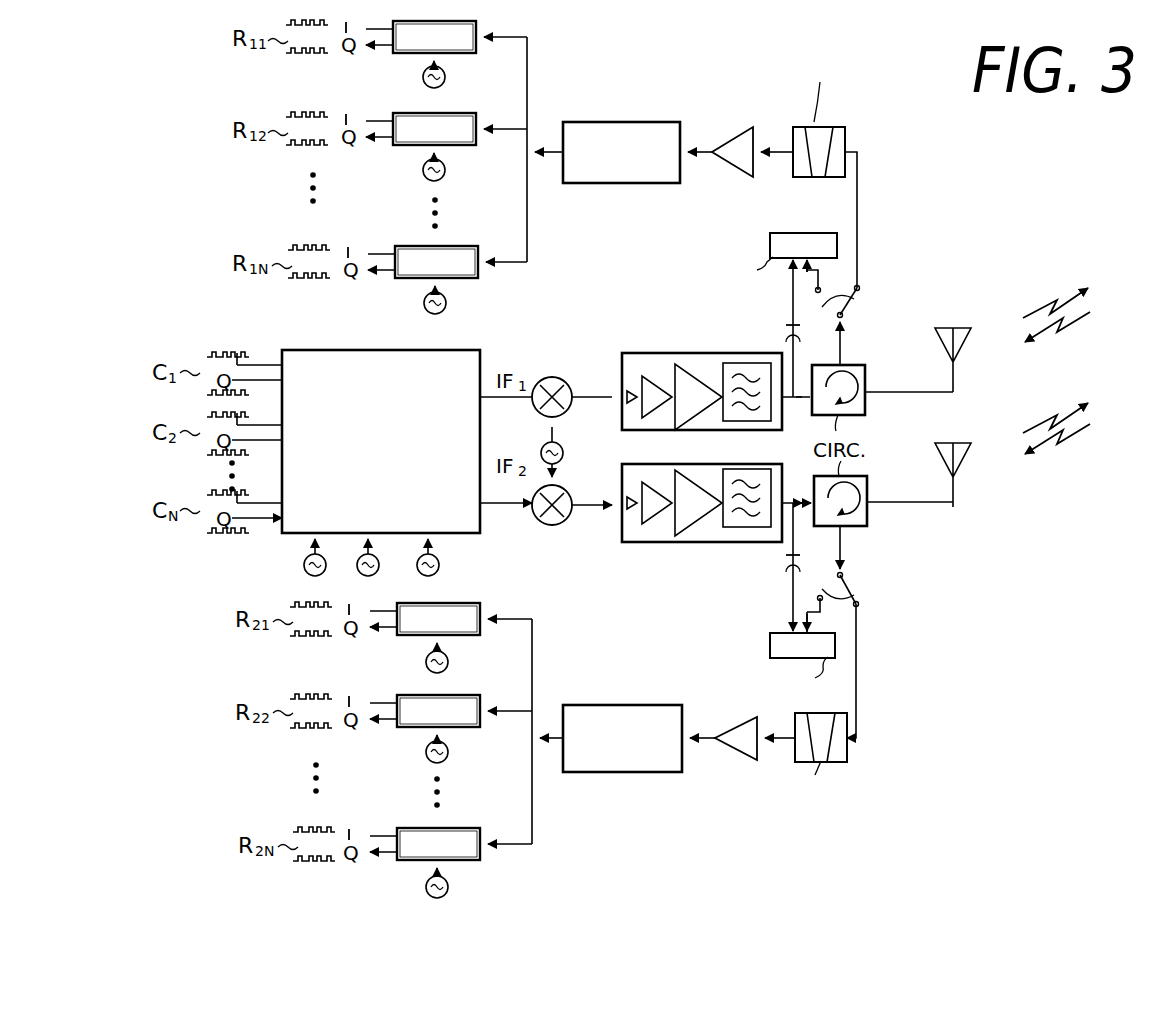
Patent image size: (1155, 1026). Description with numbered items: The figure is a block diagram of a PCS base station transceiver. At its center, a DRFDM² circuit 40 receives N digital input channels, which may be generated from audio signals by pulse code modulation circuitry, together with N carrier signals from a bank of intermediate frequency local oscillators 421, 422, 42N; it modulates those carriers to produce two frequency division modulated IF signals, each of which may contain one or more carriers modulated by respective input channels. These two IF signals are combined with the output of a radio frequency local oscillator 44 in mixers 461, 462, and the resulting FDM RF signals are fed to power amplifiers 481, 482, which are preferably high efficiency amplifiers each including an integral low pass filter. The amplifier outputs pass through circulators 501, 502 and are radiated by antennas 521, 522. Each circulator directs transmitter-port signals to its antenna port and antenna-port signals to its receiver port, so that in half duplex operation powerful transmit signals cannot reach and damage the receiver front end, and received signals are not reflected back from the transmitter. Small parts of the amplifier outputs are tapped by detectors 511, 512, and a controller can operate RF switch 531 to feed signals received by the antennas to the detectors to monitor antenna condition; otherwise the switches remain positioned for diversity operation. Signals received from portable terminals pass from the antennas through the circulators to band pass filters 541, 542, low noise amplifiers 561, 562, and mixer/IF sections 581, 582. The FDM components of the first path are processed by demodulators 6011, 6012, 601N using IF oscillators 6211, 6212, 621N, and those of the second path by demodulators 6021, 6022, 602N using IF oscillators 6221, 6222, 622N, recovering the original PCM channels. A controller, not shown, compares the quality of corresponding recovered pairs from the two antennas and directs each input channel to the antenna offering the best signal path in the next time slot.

The DRFDM² circuit 40 is at (381, 441).
The intermediate frequency local oscillator 421 is at (304, 565).
The intermediate frequency local oscillator 422 is at (375, 575).
The intermediate frequency local oscillator 42N is at (440, 567).
The radio frequency local oscillator 44 is at (563, 453).
The mixer 461 is at (558, 375).
The mixer 462 is at (552, 525).
The power amplifier 481 is at (678, 352).
The power amplifier 482 is at (678, 544).
The circulator 501 is at (852, 365).
The circulator 502 is at (866, 523).
The detector 511 is at (800, 233).
The detector 512 is at (768, 633).
The antenna 521 is at (953, 330).
The antenna 522 is at (958, 478).
The RF switch 531 is at (860, 286).
The band pass filter 541 is at (847, 128).
The band pass filter 542 is at (849, 760).
The low noise amplifier 561 is at (735, 165).
The low noise amplifier 562 is at (728, 717).
The mixer/IF section 581 is at (622, 185).
The mixer/IF section 582 is at (622, 703).
The demodulator 6011 is at (470, 53).
The demodulator 6012 is at (470, 145).
The demodulator 601N is at (472, 278).
The demodulator 6021 is at (474, 635).
The demodulator 6022 is at (476, 727).
The demodulator 602N is at (478, 858).
The IF oscillator 6211 is at (423, 78).
The IF oscillator 6212 is at (423, 171).
The IF oscillator 621N is at (424, 304).
The IF oscillator 6221 is at (426, 663).
The IF oscillator 6222 is at (426, 750).
The IF oscillator 622N is at (426, 890).